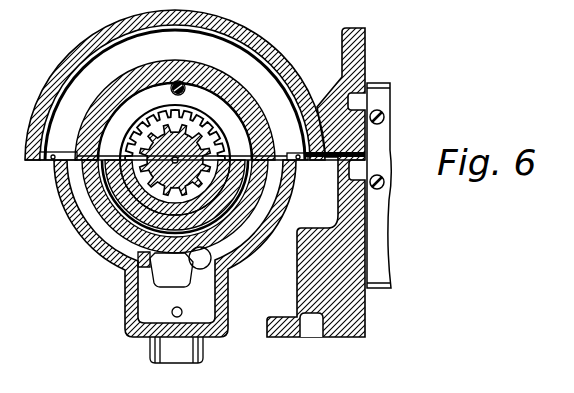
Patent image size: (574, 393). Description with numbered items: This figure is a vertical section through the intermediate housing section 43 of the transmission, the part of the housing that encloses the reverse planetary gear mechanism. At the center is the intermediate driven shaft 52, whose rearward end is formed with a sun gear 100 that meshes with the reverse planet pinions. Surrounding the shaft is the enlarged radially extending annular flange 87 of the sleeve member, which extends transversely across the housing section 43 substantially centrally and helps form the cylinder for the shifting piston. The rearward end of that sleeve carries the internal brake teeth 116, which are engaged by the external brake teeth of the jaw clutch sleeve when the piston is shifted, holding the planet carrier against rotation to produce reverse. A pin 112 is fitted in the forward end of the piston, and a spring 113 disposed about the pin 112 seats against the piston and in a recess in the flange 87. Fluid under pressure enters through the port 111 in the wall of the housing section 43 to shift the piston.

The intermediate housing section 43 is at (80, 43).
The annular flange 87 is at (70, 68).
The sun gear 100 is at (82, 190).
The internal brake teeth 116 is at (228, 148).
The intermediate driven shaft 52 is at (150, 146).
The pin 112 is at (184, 90).
The spring 113 is at (171, 88).
The port 111 is at (328, 167).